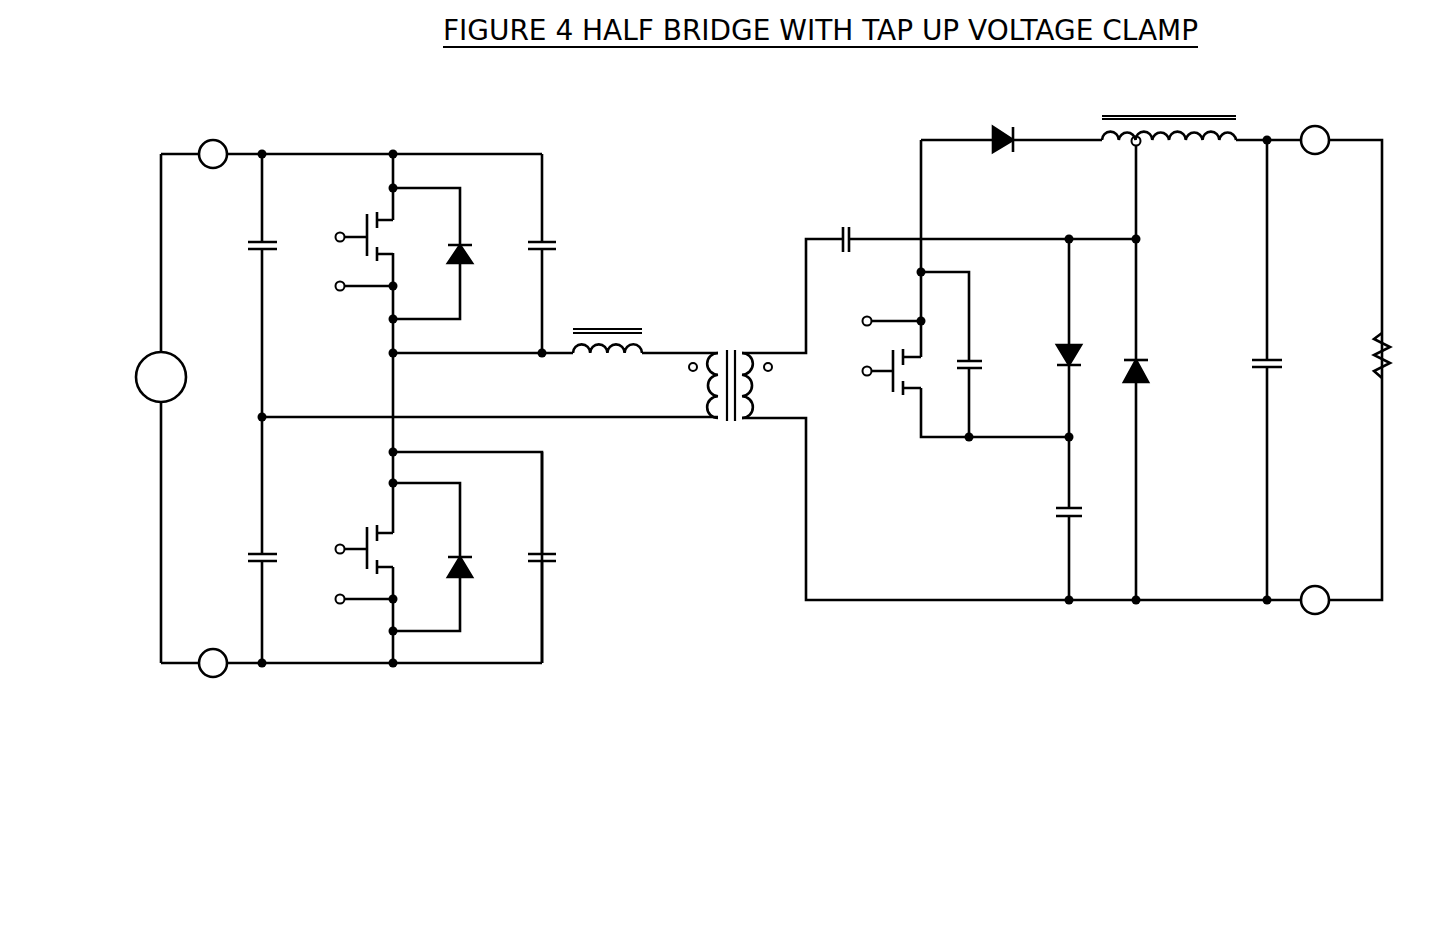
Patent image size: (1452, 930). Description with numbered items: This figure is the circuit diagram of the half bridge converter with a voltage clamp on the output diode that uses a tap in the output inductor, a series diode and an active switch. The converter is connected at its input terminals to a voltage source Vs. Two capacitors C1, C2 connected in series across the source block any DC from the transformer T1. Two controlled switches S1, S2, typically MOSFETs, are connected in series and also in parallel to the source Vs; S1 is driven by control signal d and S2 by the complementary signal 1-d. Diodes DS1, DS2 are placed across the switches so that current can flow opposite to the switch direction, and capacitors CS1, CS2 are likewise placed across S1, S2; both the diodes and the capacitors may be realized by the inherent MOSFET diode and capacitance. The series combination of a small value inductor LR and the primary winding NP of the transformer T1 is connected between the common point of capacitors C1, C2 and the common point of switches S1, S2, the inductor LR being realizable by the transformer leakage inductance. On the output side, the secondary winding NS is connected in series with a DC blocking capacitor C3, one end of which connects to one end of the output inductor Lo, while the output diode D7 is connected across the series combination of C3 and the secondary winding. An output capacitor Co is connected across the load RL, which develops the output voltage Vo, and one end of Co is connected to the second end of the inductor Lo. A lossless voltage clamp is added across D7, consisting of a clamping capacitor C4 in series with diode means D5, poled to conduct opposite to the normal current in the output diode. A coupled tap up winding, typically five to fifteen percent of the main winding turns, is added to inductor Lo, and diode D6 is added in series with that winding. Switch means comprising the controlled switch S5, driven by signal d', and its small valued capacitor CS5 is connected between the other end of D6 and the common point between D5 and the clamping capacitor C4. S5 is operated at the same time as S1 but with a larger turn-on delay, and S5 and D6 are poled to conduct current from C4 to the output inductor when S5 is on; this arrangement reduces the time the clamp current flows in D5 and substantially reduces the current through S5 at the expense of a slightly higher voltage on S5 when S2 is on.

The voltage source Vs is at (141, 379).
The capacitor C1 is at (249, 285).
The capacitor C2 is at (248, 540).
The controlled switch S1 is at (354, 248).
The controlled switch S2 is at (353, 560).
The duty cycle control signal of S1 d is at (316, 265).
The complementary duty cycle control signal of S2 1-d is at (308, 577).
The diode DS1 is at (450, 253).
The diode DS2 is at (450, 557).
The capacitor CS1 is at (560, 253).
The capacitor CS2 is at (560, 557).
The small value inductor LR is at (607, 330).
The transformer T1 is at (731, 371).
The primary winding NP is at (687, 385).
The secondary winding NS is at (774, 385).
The DC blocking capacitor C3 is at (831, 225).
The diode D6 is at (994, 129).
The output inductor Lo is at (1169, 338).
The controlled switch S5 is at (881, 362).
The control signal of S5 d' is at (864, 348).
The small valued capacitor CS5 is at (969, 354).
The diode means D5 is at (1083, 338).
The output diode D7 is at (1149, 361).
The clamping capacitor C4 is at (1058, 518).
The output capacitor Co is at (1279, 370).
The load RL is at (1360, 355).
The output voltage Vo is at (1417, 349).